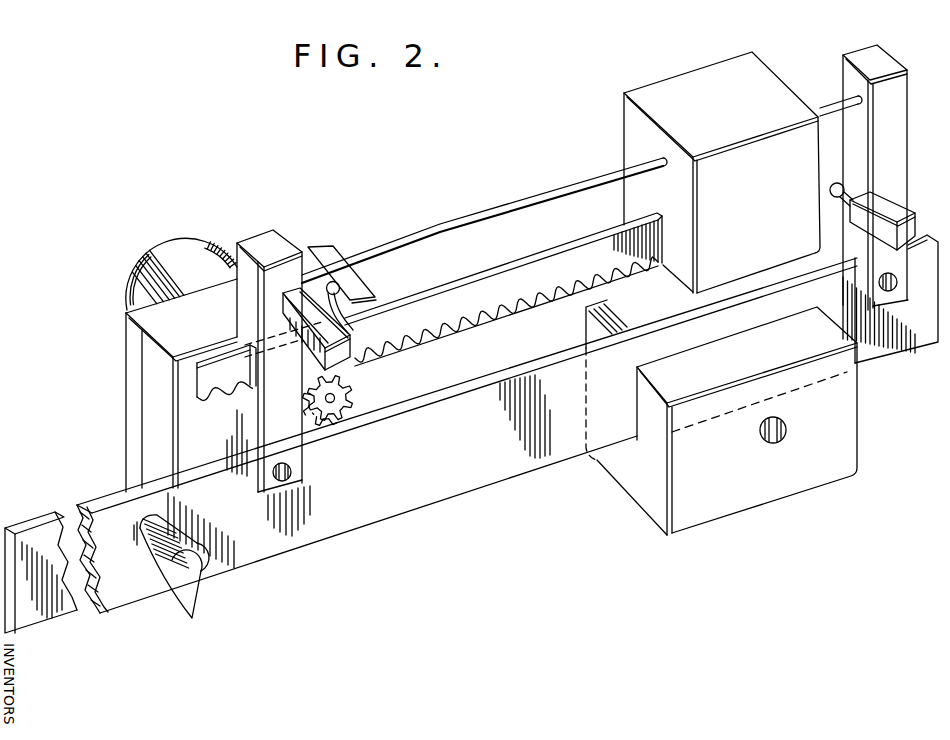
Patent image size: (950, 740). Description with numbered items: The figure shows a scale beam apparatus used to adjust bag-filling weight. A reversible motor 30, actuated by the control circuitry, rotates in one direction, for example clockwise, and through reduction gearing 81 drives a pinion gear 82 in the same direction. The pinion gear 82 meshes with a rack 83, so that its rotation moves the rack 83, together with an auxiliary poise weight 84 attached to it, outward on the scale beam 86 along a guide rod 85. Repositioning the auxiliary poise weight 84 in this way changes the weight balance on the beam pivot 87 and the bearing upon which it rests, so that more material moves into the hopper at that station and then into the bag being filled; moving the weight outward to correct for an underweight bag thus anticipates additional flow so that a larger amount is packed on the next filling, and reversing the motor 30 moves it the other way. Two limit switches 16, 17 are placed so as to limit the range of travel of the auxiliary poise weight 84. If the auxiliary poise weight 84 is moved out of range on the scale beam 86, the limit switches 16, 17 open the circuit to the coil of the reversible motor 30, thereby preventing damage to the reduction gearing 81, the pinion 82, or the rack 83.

The limit switch 16 is at (338, 346).
The limit switch 17 is at (901, 203).
The reversible motor 30 is at (208, 242).
The reduction gearing 81 is at (128, 375).
The pinion gear 82 is at (352, 410).
The rack 83 is at (423, 295).
The auxiliary poise weight 84 is at (655, 86).
The guide rod 85 is at (380, 247).
The scale beam 86 is at (136, 600).
The beam pivot 87 is at (199, 598).